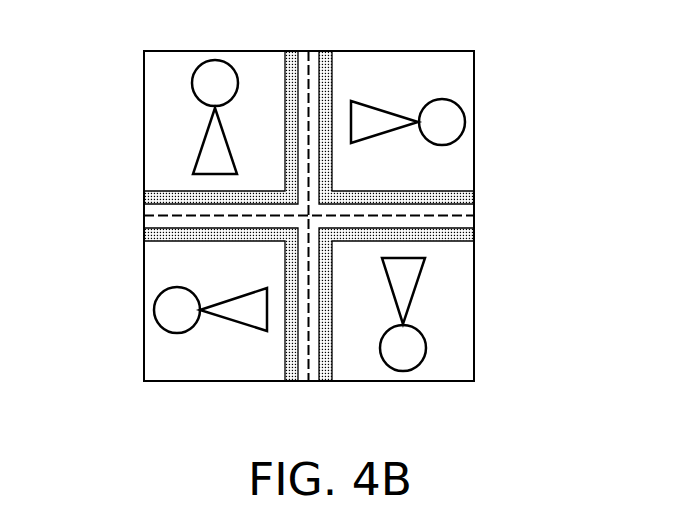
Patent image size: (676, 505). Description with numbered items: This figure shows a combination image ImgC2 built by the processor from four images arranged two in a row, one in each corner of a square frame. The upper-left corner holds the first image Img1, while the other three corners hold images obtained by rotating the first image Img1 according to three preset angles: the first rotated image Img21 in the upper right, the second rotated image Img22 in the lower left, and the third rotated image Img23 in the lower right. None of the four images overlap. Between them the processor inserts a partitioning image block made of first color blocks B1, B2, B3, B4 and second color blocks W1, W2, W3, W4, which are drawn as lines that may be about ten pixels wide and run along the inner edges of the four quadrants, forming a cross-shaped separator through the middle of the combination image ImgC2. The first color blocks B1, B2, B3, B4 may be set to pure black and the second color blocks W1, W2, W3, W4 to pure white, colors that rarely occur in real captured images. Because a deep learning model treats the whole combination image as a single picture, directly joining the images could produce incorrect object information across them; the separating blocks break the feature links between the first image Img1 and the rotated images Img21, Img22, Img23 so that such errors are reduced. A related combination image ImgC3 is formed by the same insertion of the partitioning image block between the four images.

The combination image ImgC2 is at (447, 50).
The combination image ImgC3 is at (540, 495).
The first image Img1 is at (155, 105).
The first rotated image Img21 is at (463, 72).
The second rotated image Img22 is at (153, 275).
The third rotated image Img23 is at (460, 293).
The first color block B1 is at (290, 50).
The first color block B2 is at (328, 50).
The first color block B3 is at (142, 232).
The first color block B4 is at (473, 232).
The second color block W1 is at (143, 210).
The second color block W2 is at (475, 212).
The second color block W3 is at (302, 376).
The second color block W4 is at (315, 376).